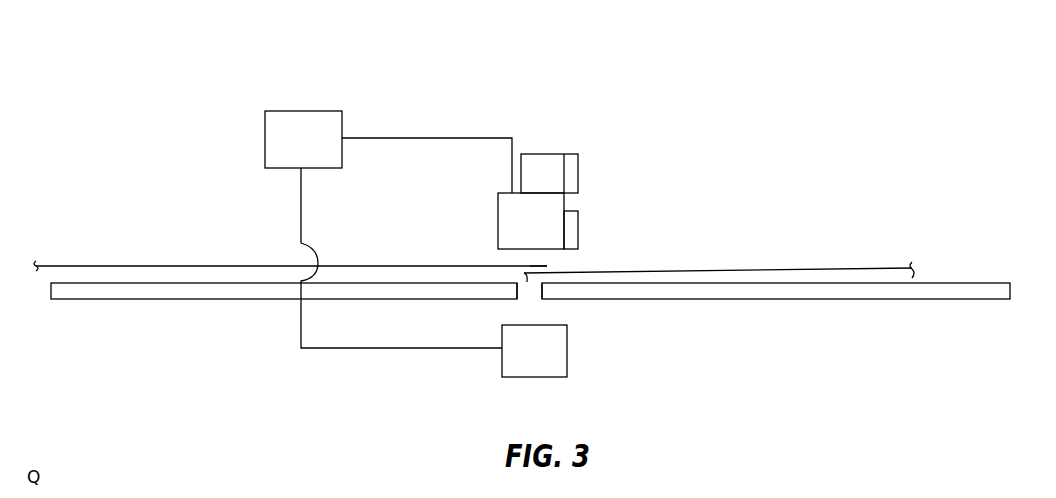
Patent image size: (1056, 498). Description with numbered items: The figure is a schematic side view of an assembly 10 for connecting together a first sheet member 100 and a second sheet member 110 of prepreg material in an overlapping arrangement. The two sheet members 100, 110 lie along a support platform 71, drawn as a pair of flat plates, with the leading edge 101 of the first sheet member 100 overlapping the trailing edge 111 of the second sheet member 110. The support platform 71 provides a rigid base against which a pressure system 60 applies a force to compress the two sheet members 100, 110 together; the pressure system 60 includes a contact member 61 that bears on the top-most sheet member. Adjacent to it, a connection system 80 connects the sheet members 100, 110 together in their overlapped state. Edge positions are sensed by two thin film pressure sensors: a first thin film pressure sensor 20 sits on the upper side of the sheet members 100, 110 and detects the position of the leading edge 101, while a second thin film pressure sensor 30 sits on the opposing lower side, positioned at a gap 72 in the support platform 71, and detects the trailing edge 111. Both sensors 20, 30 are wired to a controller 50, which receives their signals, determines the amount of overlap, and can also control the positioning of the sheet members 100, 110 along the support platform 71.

The assembly 10 is at (773, 95).
The first thin film pressure sensor 20 is at (531, 221).
The second thin film pressure sensor 30 is at (534, 351).
The controller 50 is at (388, 229).
The pressure system 60 is at (549, 173).
The contact member 61 is at (570, 167).
The support platform 71 is at (157, 299).
The gap 72 is at (532, 298).
The connection system 80 is at (566, 226).
The first sheet member 100 is at (192, 265).
The leading edge 101 is at (569, 258).
The second sheet member 110 is at (842, 269).
The trailing edge 111 is at (527, 282).